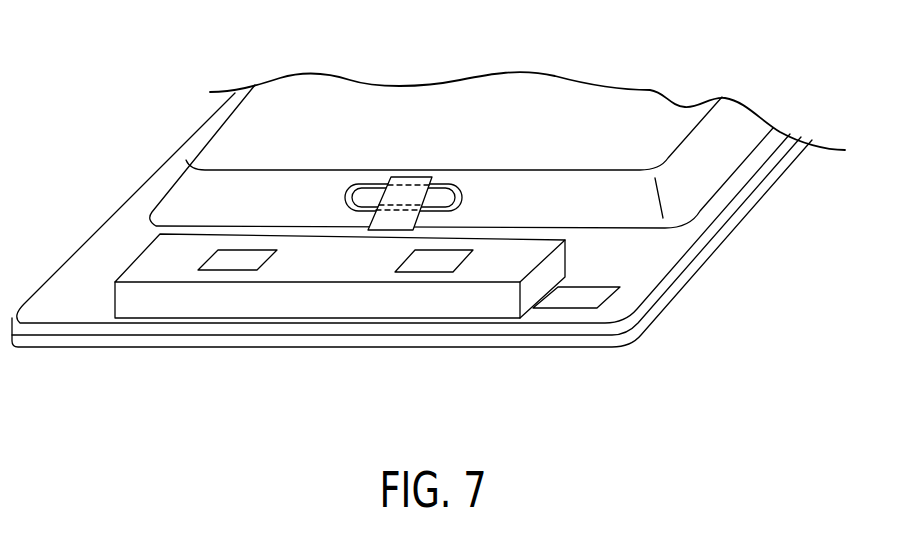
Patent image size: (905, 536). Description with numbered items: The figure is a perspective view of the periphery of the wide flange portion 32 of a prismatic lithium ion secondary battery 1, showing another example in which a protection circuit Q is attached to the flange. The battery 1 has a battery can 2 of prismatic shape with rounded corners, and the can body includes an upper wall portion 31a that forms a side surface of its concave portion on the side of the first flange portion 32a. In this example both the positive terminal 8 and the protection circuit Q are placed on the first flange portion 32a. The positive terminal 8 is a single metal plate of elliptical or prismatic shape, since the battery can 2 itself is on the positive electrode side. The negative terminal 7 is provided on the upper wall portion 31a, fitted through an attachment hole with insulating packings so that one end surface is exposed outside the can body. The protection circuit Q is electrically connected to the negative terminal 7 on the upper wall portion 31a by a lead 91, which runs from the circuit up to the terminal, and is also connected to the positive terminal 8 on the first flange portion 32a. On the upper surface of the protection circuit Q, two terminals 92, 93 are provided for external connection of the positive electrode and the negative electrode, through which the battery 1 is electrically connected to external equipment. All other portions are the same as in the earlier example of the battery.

The battery 1 is at (116, 119).
The battery can 2 is at (290, 86).
The negative terminal 7 is at (373, 199).
The positive terminal 8 is at (586, 299).
The upper wall portion 31a is at (584, 202).
The flange portion 32 is at (738, 188).
The first flange portion 32a is at (81, 308).
The lead 91 is at (413, 190).
The terminal 92 is at (447, 261).
The terminal 93 is at (248, 261).
The protection circuit Q is at (327, 300).